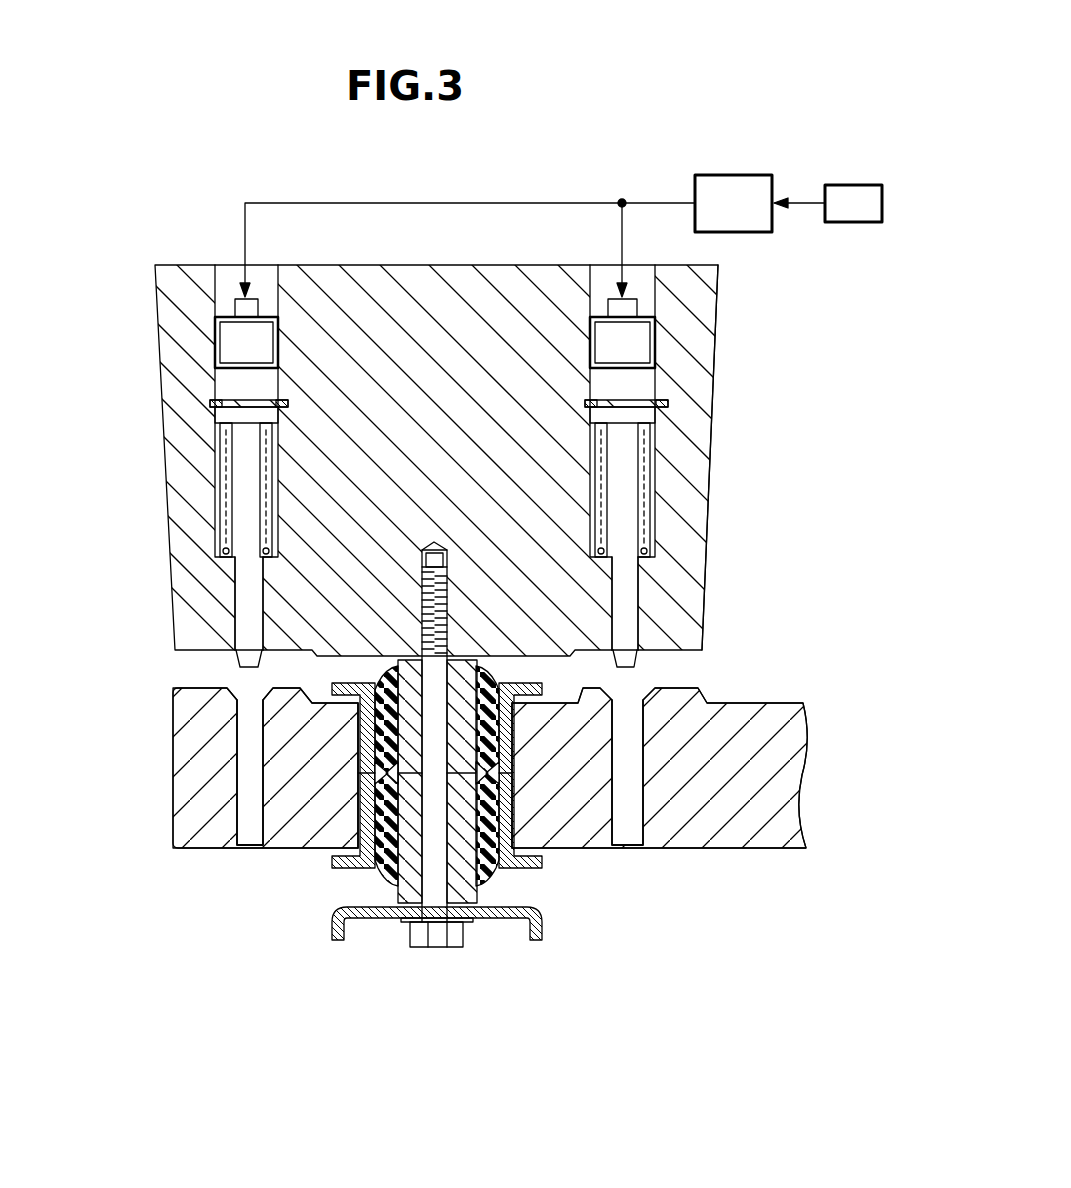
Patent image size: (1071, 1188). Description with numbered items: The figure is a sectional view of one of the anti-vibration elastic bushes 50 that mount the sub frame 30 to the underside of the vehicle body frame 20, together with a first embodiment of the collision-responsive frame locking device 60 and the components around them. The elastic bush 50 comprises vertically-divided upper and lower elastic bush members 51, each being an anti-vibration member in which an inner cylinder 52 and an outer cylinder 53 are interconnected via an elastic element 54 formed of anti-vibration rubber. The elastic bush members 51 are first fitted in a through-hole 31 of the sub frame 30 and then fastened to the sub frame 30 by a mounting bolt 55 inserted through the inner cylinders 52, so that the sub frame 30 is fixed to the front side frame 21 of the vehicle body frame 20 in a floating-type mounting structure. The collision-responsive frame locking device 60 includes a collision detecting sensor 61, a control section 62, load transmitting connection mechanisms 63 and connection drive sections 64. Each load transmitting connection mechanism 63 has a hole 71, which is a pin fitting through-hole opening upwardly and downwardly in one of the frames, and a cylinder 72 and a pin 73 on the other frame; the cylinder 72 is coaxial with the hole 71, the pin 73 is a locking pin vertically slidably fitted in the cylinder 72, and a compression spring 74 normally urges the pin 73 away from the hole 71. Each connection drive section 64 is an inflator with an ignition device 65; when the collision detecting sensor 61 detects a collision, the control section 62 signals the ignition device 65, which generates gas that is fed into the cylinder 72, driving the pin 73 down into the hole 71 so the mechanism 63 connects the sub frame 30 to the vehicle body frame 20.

The vehicle body frame 20 is at (535, 462).
The front side frame 21 is at (705, 297).
The sub frame 30 is at (493, 804).
The through-hole 31 is at (530, 873).
The anti-vibration elastic bush 50 is at (493, 882).
The elastic bush member 51 is at (457, 834).
The inner cylinder 52 is at (366, 862).
The outer cylinder 53 is at (398, 870).
The elastic element 54 is at (386, 827).
The mounting bolt 55 is at (437, 960).
The collision-responsive frame locking device 60 is at (566, 163).
The collision detecting sensor 61 is at (853, 193).
The control section 62 is at (738, 190).
The load transmitting connection mechanism 63 is at (463, 493).
The connection drive section 64 is at (228, 350).
The ignition device 65 is at (233, 308).
The hole 71 is at (243, 745).
The cylinder 72 is at (461, 625).
The pin 73 is at (245, 582).
The compression spring 74 is at (222, 515).